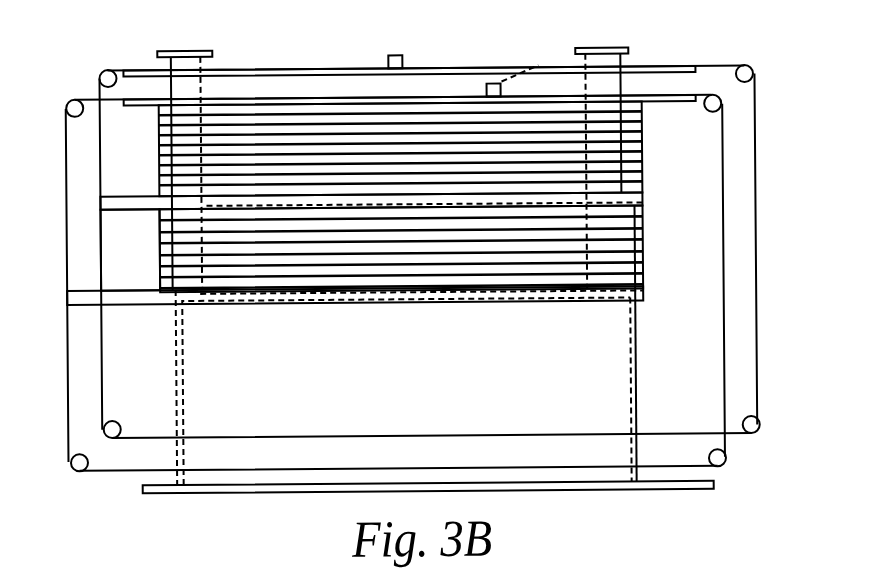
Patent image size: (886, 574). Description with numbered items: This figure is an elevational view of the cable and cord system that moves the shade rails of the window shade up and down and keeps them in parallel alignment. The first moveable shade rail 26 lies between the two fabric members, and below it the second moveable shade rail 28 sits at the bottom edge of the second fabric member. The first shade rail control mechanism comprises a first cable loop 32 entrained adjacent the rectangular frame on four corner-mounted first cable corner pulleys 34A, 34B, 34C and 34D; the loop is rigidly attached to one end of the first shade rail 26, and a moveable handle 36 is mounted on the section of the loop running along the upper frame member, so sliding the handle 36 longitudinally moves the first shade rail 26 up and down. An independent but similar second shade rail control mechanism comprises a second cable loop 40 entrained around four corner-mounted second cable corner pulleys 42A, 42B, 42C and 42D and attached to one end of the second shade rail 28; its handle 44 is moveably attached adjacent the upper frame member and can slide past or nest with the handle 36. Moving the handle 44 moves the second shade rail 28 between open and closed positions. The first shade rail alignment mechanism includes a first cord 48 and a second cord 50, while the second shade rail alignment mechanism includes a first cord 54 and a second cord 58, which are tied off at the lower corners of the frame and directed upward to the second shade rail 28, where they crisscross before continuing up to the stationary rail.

The first moveable shade rail 26 is at (98, 202).
The second moveable shade rail 28 is at (67, 295).
The first cable loop 32 is at (100, 255).
The first cable corner pulley 34A is at (100, 71).
The first cable corner pulley 34B is at (755, 74).
The first cable corner pulley 34C is at (758, 428).
The first cable corner pulley 34D is at (120, 425).
The moveable handle 36 is at (397, 55).
The second cable loop 40 is at (67, 365).
The second cable corner pulley 42A is at (66, 104).
The second cable corner pulley 42B is at (704, 109).
The second cable corner pulley 42C is at (726, 461).
The second cable corner pulley 42D is at (69, 464).
The handle 44 is at (492, 84).
The first cord 48 is at (174, 358).
The second cord 50 is at (634, 378).
The first cord 54 is at (184, 351).
The second cord 58 is at (629, 341).